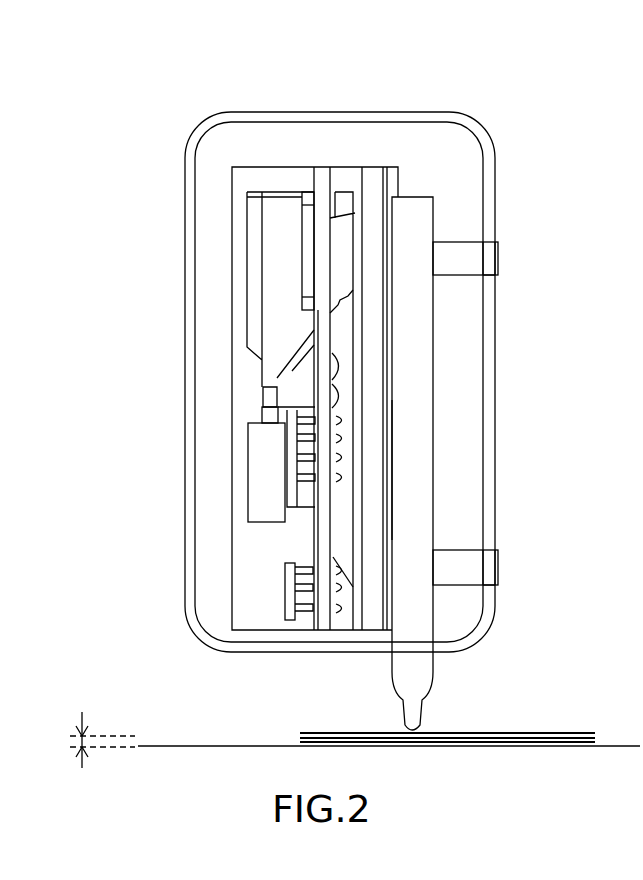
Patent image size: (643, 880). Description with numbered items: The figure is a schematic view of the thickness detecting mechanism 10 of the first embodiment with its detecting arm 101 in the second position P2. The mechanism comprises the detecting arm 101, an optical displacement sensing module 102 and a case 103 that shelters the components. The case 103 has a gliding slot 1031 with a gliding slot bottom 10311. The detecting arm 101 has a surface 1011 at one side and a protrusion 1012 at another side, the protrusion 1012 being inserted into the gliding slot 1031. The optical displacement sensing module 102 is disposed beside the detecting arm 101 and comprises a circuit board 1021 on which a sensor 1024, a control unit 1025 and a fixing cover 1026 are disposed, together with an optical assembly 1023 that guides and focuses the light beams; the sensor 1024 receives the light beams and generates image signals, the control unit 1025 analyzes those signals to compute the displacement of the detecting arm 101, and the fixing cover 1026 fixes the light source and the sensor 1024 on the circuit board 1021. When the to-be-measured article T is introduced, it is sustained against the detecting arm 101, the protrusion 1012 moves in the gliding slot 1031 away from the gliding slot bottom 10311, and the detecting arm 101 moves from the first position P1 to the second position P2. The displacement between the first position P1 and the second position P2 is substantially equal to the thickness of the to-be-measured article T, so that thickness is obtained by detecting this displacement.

The thickness detecting mechanism 10 is at (298, 51).
The detecting arm 101 is at (412, 218).
The surface 1011 is at (396, 470).
The protrusion 1012 is at (455, 255).
The optical displacement sensing module 102 is at (292, 160).
The circuit board 1021 is at (322, 307).
The optical assembly 1023 is at (343, 538).
The sensor 1024 is at (290, 440).
The control unit 1025 is at (292, 593).
The fixing cover 1026 is at (275, 385).
The case 103 is at (386, 113).
The gliding slot 1031 is at (487, 233).
The gliding slot bottom 10311 is at (487, 285).
The to-be-measured article T is at (523, 735).
The first position P1 is at (115, 746).
The second position P2 is at (115, 737).